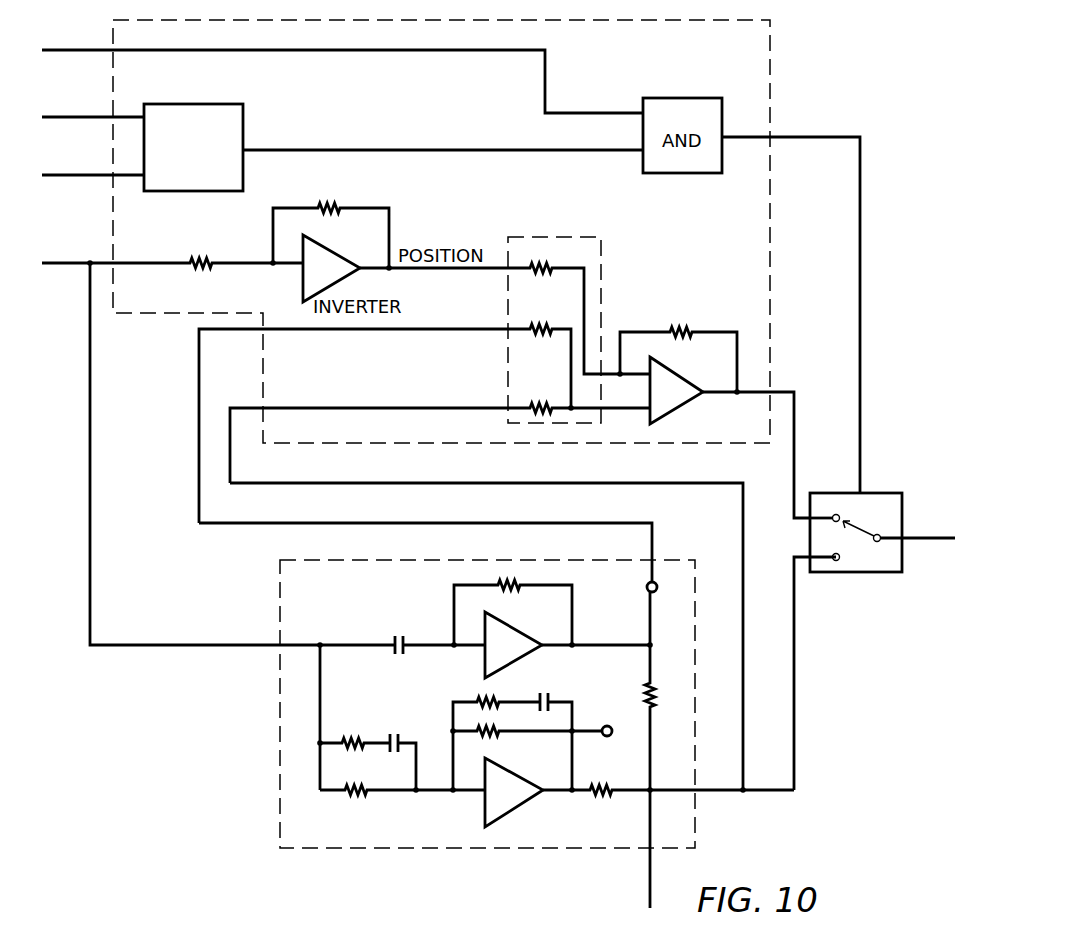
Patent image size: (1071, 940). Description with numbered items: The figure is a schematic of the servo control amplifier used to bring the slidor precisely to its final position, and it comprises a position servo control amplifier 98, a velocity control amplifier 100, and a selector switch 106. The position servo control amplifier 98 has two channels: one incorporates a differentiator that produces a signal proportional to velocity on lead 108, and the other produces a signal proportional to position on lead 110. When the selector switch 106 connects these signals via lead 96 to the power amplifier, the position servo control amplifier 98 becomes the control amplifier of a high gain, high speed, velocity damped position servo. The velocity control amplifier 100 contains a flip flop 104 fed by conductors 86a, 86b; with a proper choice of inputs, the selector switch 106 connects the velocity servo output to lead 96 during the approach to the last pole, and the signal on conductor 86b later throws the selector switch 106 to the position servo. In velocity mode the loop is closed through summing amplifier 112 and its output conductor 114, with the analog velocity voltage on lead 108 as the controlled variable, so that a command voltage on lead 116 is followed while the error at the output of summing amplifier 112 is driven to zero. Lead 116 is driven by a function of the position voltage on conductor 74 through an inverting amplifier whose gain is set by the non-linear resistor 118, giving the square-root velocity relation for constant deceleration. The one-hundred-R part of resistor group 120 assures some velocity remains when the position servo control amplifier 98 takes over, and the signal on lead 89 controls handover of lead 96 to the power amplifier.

The lead 89 is at (90, 50).
The conductor 86a is at (93, 117).
The conductor 86b is at (93, 175).
The flip flop 104 is at (226, 104).
The velocity control amplifier 100 is at (770, 120).
The conductor 74 is at (75, 264).
The resistor 118 is at (327, 207).
The lead 116 is at (496, 268).
The resistor group 120 is at (602, 293).
The lead 108 is at (490, 330).
The summing amplifier 112 is at (678, 400).
The output conductor 114 is at (796, 467).
The selector switch 106 is at (898, 493).
The lead 96 is at (922, 541).
The lead 110 is at (579, 792).
The position servo control amplifier 98 is at (415, 852).